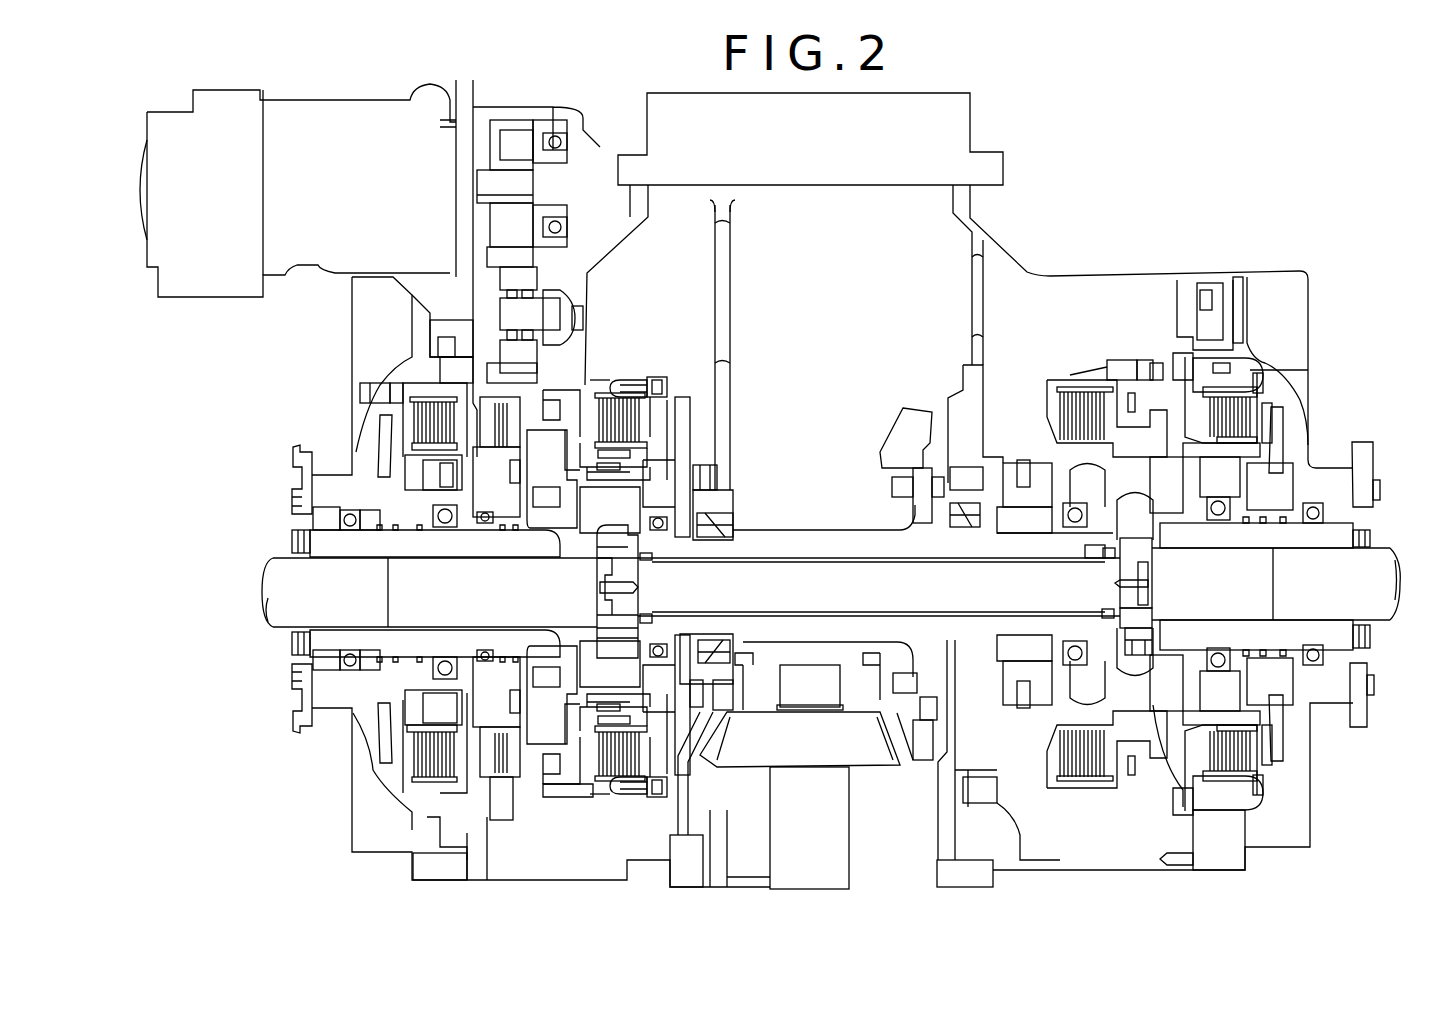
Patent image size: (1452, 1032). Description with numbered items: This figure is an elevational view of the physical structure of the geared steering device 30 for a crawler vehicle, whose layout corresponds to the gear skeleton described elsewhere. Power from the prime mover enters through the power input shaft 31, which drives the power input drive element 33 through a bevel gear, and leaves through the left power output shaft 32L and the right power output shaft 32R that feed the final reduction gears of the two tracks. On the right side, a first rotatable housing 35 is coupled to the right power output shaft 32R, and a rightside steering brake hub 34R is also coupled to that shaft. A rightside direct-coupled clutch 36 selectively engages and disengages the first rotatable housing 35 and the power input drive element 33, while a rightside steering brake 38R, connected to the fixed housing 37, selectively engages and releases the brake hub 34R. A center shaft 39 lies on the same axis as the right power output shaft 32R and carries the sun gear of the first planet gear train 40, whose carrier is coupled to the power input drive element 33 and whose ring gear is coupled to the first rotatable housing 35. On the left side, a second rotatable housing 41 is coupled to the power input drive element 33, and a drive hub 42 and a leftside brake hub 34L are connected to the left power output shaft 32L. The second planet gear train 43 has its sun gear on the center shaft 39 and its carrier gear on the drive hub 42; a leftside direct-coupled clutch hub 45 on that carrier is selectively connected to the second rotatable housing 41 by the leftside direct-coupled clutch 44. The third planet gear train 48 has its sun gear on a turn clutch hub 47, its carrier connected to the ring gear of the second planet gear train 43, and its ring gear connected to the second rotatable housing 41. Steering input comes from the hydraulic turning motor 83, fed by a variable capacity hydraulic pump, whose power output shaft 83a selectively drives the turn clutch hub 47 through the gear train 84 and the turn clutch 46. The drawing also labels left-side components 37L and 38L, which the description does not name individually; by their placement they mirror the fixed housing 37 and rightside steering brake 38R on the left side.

The geared steering device 30 is at (1018, 202).
The power input shaft 31 is at (851, 832).
The left power output shaft 32L is at (257, 576).
The right power output shaft 32R is at (1397, 618).
The power input drive element 33 is at (912, 513).
The leftside brake hub 34L is at (437, 475).
The rightside steering brake hub 34R is at (1248, 455).
The first rotatable housing 35 is at (1147, 368).
The rightside direct-coupled clutch 36 is at (1046, 417).
The fixed housing 37 is at (1255, 358).
The left lower bracket 37L is at (445, 800).
The left lower clutch 38L is at (410, 764).
The rightside steering brake 38R is at (1243, 740).
The center shaft 39 is at (795, 575).
The first planet gear train 40 is at (1131, 800).
The second rotatable housing 41 is at (648, 833).
The drive hub 42 is at (700, 500).
The second planet gear train 43 is at (607, 796).
The leftside direct-coupled clutch 44 is at (622, 425).
The leftside direct-coupled clutch hub 45 is at (657, 458).
The turn clutch 46 is at (517, 780).
The turn clutch hub 47 is at (533, 782).
The third planet gear train 48 is at (555, 796).
The hydraulic turning motor 83 is at (273, 276).
The power output shaft of the hydraulic turning motor 83a is at (505, 160).
The gear train 84 is at (547, 262).